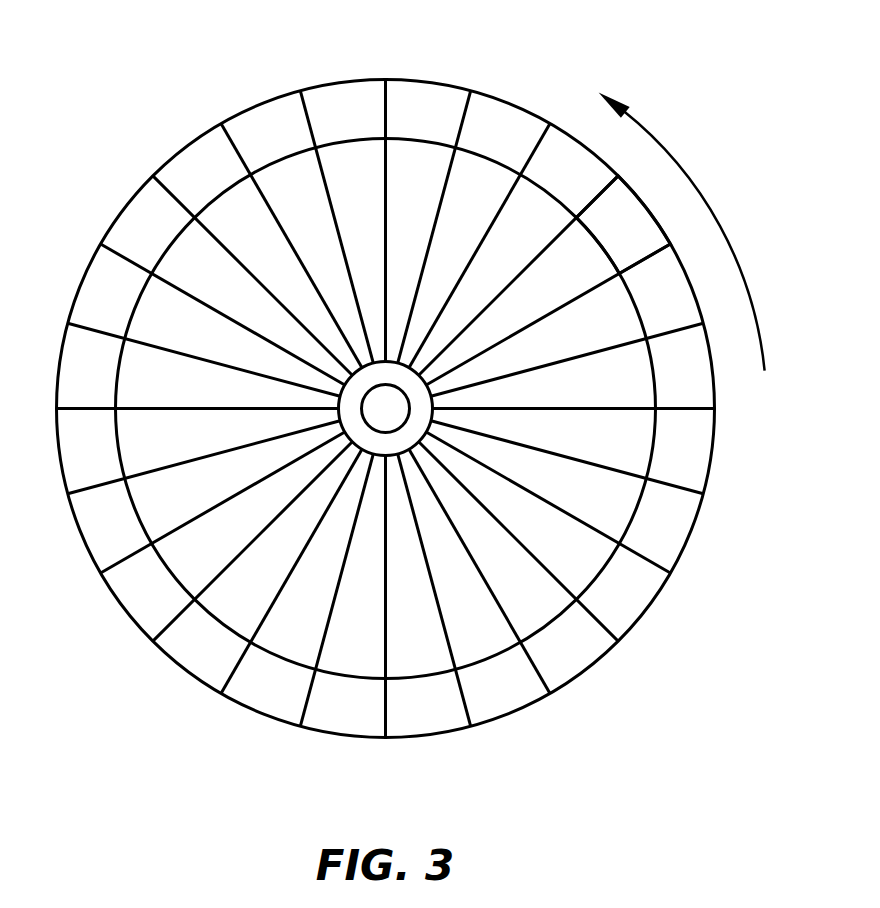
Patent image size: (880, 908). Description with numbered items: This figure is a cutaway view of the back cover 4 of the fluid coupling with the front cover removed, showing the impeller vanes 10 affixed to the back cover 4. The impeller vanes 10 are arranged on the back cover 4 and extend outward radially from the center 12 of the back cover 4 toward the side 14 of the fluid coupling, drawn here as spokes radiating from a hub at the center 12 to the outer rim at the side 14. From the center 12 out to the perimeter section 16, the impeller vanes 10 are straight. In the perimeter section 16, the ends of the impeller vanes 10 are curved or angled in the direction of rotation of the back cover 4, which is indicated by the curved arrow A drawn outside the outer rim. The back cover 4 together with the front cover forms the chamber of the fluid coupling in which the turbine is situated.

The back cover 4 is at (166, 78).
The impeller vanes 10 is at (448, 185).
The center 12 is at (371, 420).
The side 14 is at (421, 81).
The perimeter section 16 is at (607, 240).
The direction of rotation A is at (692, 178).